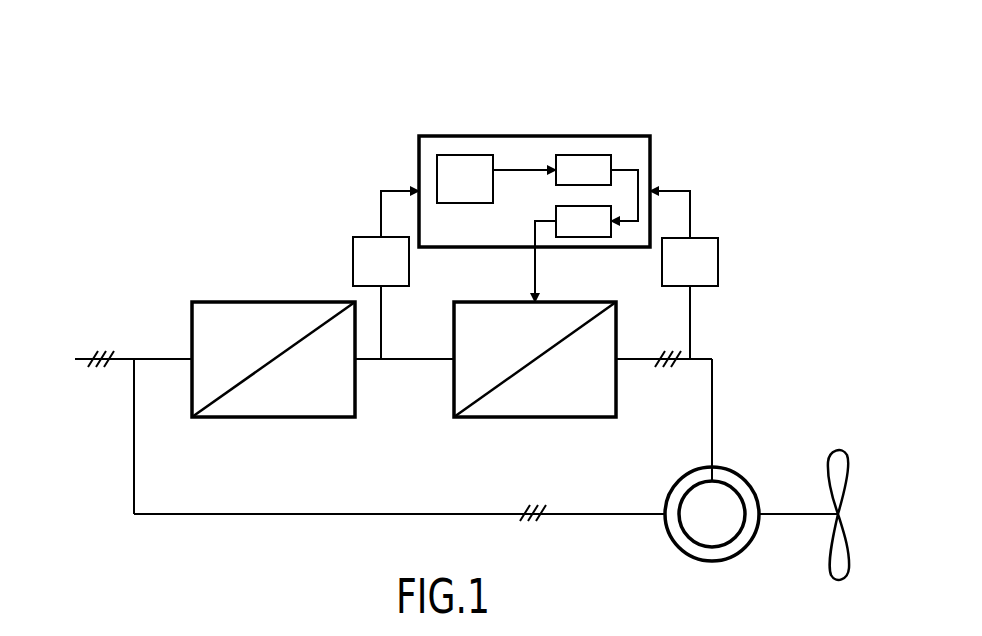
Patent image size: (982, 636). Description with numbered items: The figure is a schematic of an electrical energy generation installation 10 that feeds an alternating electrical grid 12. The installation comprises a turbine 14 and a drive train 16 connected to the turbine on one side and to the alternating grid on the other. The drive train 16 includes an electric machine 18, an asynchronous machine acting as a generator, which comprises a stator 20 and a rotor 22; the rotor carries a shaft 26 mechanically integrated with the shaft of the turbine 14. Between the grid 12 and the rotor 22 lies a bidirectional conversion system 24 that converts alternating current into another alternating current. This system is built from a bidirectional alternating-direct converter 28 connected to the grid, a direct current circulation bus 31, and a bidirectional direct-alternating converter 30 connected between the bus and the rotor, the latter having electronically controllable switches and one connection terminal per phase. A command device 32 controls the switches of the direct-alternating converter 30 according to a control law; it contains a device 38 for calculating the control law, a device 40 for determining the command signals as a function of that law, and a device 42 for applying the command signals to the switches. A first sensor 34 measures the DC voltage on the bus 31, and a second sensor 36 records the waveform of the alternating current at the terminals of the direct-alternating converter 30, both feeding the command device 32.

The electrical energy generation installation 10 is at (615, 113).
The alternating electrical grid 12 is at (84, 356).
The turbine 14 is at (847, 470).
The drive train 16 is at (707, 222).
The electric machine 18 is at (752, 466).
The stator 20 is at (681, 553).
The rotor 22 is at (688, 487).
The bidirectional conversion system 24 is at (360, 212).
The shaft 26 is at (798, 516).
The alternating-direct converter 28 is at (272, 302).
The direct-alternating converter 30 is at (530, 418).
The direct current circulation bus 31 is at (428, 361).
The command device 32 is at (527, 136).
The first sensor 34 is at (386, 238).
The second sensor 36 is at (684, 238).
The control law calculating device 38 is at (465, 179).
The command signal determining device 40 is at (583, 170).
The command signal applying device 42 is at (583, 221).